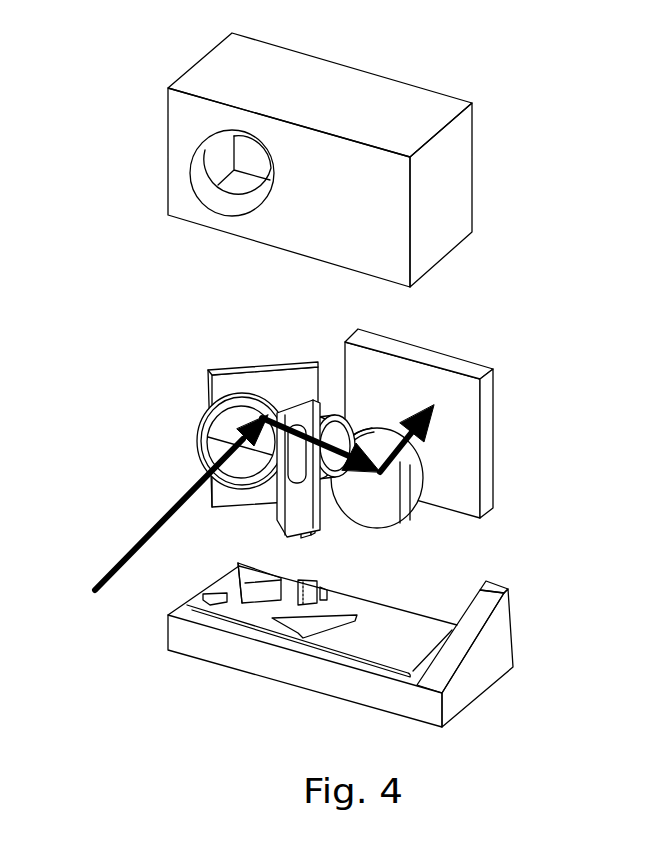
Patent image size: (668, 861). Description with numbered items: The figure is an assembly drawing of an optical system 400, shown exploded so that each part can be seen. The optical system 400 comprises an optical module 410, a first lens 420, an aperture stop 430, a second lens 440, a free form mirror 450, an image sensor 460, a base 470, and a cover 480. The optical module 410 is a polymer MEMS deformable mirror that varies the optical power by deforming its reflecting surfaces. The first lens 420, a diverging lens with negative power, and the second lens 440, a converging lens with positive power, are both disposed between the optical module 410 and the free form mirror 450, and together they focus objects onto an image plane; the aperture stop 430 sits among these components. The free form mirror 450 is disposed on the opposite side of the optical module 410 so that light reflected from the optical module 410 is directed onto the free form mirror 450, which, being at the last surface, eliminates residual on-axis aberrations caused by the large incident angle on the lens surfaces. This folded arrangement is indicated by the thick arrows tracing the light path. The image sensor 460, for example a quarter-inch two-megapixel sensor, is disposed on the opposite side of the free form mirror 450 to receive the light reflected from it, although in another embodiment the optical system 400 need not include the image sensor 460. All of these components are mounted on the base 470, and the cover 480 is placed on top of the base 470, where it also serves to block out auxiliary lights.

The optical system 400 is at (647, 68).
The optical module 410 is at (246, 382).
The first lens 420 is at (205, 418).
The aperture stop 430 is at (287, 510).
The second lens 440 is at (333, 513).
The free form mirror 450 is at (370, 500).
The image sensor 460 is at (473, 469).
The base 470 is at (477, 652).
The cover 480 is at (437, 187).